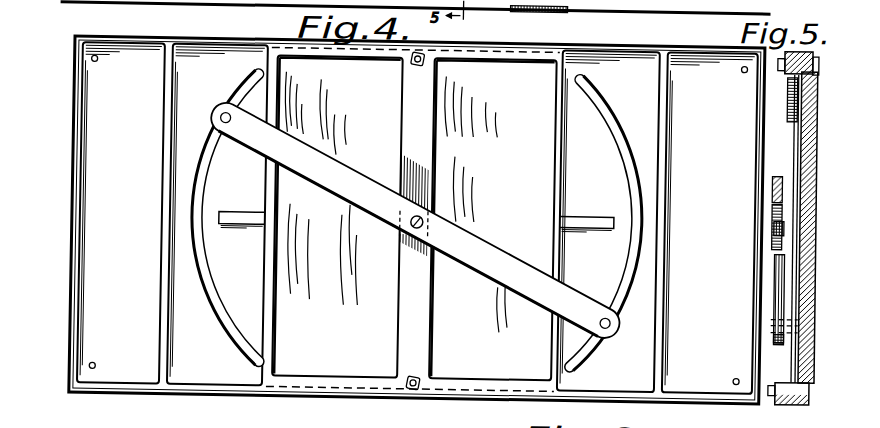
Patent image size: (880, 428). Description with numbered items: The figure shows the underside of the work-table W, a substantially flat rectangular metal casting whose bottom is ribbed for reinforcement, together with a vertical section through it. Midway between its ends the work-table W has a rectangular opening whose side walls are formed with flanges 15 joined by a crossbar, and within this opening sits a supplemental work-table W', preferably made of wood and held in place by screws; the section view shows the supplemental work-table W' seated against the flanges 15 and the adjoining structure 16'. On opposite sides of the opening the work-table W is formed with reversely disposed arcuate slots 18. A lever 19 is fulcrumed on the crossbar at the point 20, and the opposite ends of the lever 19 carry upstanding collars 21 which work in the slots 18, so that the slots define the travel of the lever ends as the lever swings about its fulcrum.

In FIG. 4, the flanges 15 is at (493, 45).
In FIG. 4, the glass pane 16' is at (491, 219).
In FIG. 4, the arcuate slots 18 is at (206, 188).
In FIG. 4, the lever 19 is at (492, 246).
In FIG. 5, the lever 19 is at (781, 267).
In FIG. 4, the fulcrum point 20 is at (436, 207).
In FIG. 5, the fulcrum point 20 is at (783, 228).
In FIG. 5, the upstanding collars 21 is at (781, 326).
In FIG. 5, the work-table W is at (756, 213).
In FIG. 4, the supplemental work-table W' is at (337, 217).
In FIG. 5, the supplemental work-table W' is at (770, 227).